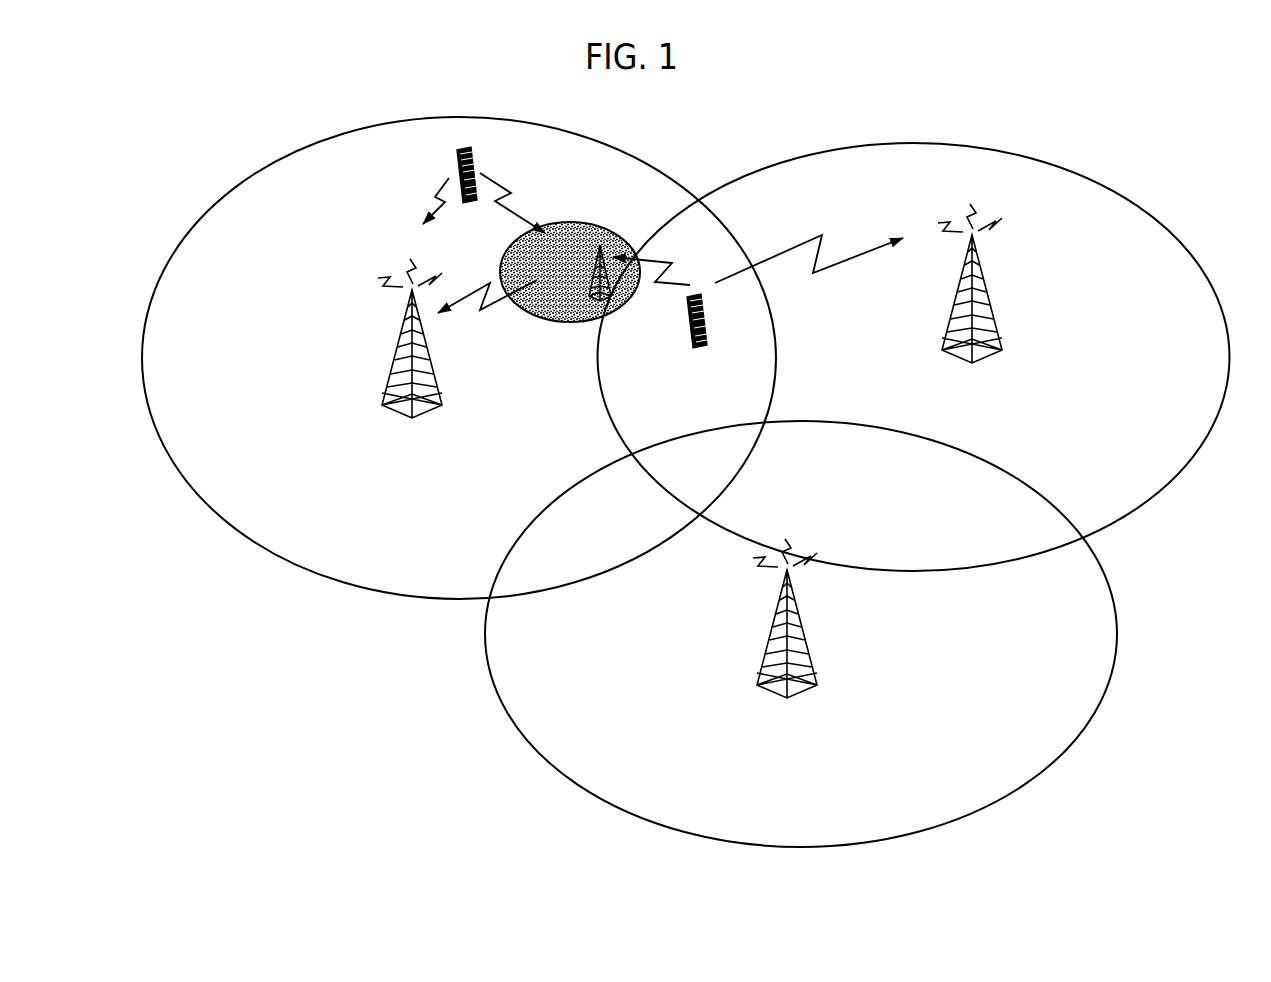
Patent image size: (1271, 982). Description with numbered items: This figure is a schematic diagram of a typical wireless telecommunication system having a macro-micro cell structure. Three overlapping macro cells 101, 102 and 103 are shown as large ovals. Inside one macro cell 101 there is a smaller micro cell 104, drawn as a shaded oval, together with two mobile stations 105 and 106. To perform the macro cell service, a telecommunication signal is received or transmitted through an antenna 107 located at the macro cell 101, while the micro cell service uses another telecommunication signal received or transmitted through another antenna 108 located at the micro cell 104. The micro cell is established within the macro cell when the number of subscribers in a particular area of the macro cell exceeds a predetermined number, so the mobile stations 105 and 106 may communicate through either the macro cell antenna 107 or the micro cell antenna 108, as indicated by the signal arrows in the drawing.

The macro cell 101 is at (385, 596).
The macro cell 102 is at (1155, 494).
The macro cell 103 is at (1033, 773).
The micro cell 104 is at (584, 222).
The mobile station 105 is at (457, 154).
The mobile station 106 is at (697, 348).
The antenna 107 is at (391, 373).
The antenna 108 is at (586, 322).